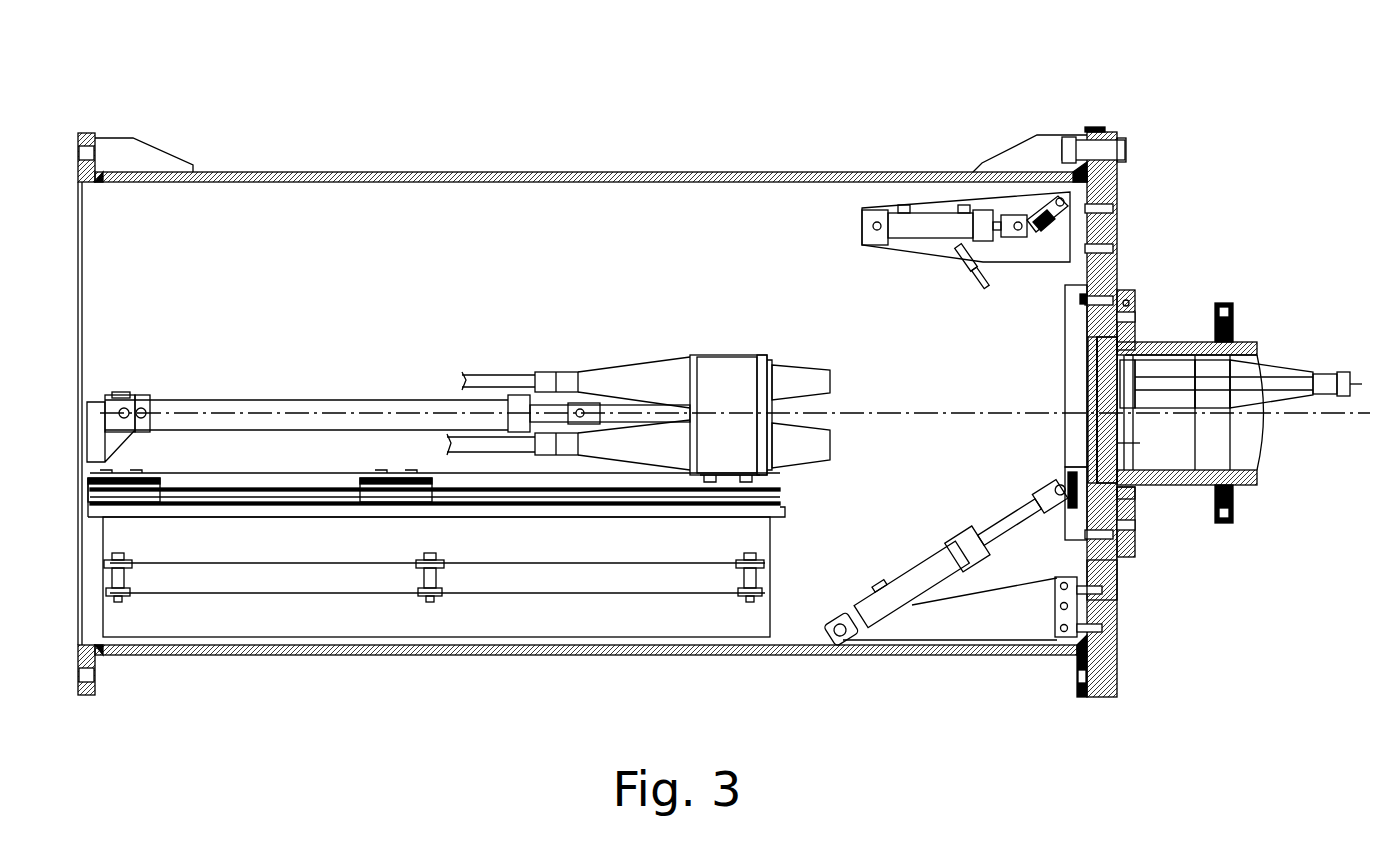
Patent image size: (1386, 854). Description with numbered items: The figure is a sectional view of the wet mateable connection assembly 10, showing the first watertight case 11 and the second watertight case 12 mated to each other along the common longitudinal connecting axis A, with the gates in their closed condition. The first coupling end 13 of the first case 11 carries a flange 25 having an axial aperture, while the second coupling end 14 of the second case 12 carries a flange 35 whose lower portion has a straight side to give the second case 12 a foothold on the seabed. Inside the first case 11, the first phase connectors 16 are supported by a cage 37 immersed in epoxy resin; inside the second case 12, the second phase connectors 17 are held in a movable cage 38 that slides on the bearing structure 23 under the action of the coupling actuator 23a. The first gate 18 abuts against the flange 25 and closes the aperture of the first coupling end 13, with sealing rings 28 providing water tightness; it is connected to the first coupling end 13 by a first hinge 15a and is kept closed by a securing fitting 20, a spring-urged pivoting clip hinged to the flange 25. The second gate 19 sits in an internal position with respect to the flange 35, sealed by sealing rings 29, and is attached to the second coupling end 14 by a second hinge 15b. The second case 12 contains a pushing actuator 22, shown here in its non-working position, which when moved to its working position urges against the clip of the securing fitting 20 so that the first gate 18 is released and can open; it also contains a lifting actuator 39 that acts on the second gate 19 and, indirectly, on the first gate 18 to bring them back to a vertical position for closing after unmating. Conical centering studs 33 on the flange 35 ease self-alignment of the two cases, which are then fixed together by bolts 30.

The wet mateable connection assembly 10 is at (1245, 113).
The first watertight case 11 is at (1138, 320).
The second watertight case 12 is at (882, 660).
The first coupling end 13 is at (1147, 297).
The second coupling end 14 is at (1127, 213).
The first hinge 15a is at (1117, 553).
The second hinge 15b is at (1065, 547).
The first phase connectors 16 is at (1285, 355).
The second phase connectors 17 is at (733, 343).
The first gate 18 is at (1108, 443).
The second gate 19 is at (1068, 322).
The securing fitting 20 is at (1090, 343).
The pushing actuator 22 is at (965, 285).
The bearing structure 23 is at (318, 478).
The coupling actuator 23a is at (227, 412).
The flange 25 is at (1187, 343).
The sealing rings 28 is at (1135, 490).
The sealing rings 29 is at (1083, 298).
The bolts 30 is at (1125, 150).
The conical centering studs 33 is at (1137, 290).
The flange 35 is at (1105, 605).
The cage 37 is at (1193, 437).
The movable cage 38 is at (775, 365).
The lifting actuator 39 is at (920, 567).
The connecting axis A is at (890, 410).